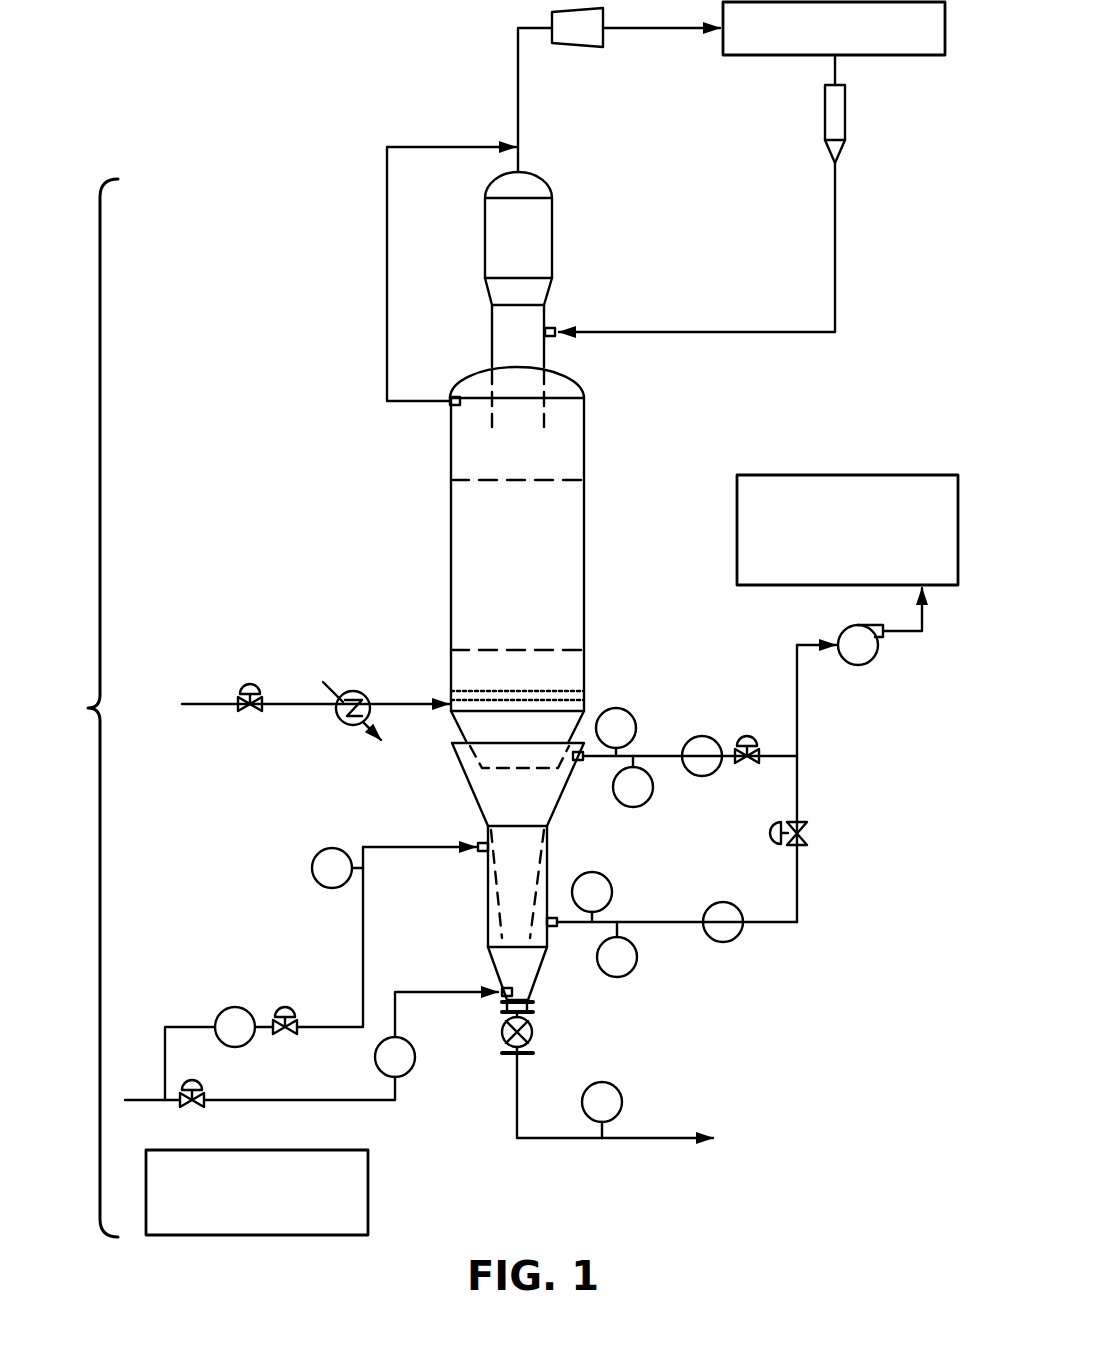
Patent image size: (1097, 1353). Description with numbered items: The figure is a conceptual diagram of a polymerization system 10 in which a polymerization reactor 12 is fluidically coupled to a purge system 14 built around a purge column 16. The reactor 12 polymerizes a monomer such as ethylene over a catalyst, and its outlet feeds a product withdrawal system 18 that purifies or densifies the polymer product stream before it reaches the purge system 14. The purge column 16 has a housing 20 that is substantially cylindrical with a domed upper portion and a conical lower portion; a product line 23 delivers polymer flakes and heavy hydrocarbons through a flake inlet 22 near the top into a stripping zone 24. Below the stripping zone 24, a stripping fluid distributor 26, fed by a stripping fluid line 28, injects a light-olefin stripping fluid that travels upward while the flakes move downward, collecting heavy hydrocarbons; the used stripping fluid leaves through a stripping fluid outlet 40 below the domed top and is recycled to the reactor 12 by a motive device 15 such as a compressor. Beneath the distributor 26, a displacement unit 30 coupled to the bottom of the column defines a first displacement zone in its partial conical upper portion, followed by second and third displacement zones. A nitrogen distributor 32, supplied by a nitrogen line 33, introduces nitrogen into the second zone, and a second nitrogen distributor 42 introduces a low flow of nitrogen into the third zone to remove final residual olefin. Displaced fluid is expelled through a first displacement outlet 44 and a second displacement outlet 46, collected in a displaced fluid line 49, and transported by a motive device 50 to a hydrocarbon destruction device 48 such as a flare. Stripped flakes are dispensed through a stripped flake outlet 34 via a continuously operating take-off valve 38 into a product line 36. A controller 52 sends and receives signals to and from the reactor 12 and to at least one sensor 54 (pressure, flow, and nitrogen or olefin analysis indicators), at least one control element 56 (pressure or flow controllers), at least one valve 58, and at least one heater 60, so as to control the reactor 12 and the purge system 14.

The polymerization system 10 is at (168, 66).
The polymerization reactor 12 is at (834, 28).
The purge system 14 is at (78, 708).
The motive device 15 is at (569, 48).
The purge column 16 is at (436, 537).
The product withdrawal system 18 is at (825, 128).
The housing 20 is at (451, 611).
The flake inlet 22 is at (550, 326).
The product line 23 is at (663, 332).
The stripping zone 24 is at (582, 526).
The stripping fluid distributor 26 is at (450, 692).
The stripping fluid line 28 is at (222, 702).
The displacement unit 30 is at (468, 800).
The nitrogen distributor 32 is at (478, 856).
The nitrogen line 33 is at (153, 1098).
The stripped flake outlet 34 is at (502, 1002).
The product line 36 is at (518, 1133).
The take-off valve 38 is at (537, 1033).
The stripping fluid outlet 40 is at (450, 397).
The second nitrogen distributor 42 is at (502, 988).
The first displacement outlet 44 is at (585, 762).
The second displacement outlet 46 is at (562, 918).
The hydrocarbon destruction device 48 is at (847, 530).
The displaced fluid line 49 is at (800, 732).
The motive device 50 is at (857, 665).
The controller 52 is at (257, 1192).
The sensor 54 is at (330, 848).
The control element 56 is at (243, 1000).
The valve 58 is at (258, 680).
The heater 60 is at (368, 683).